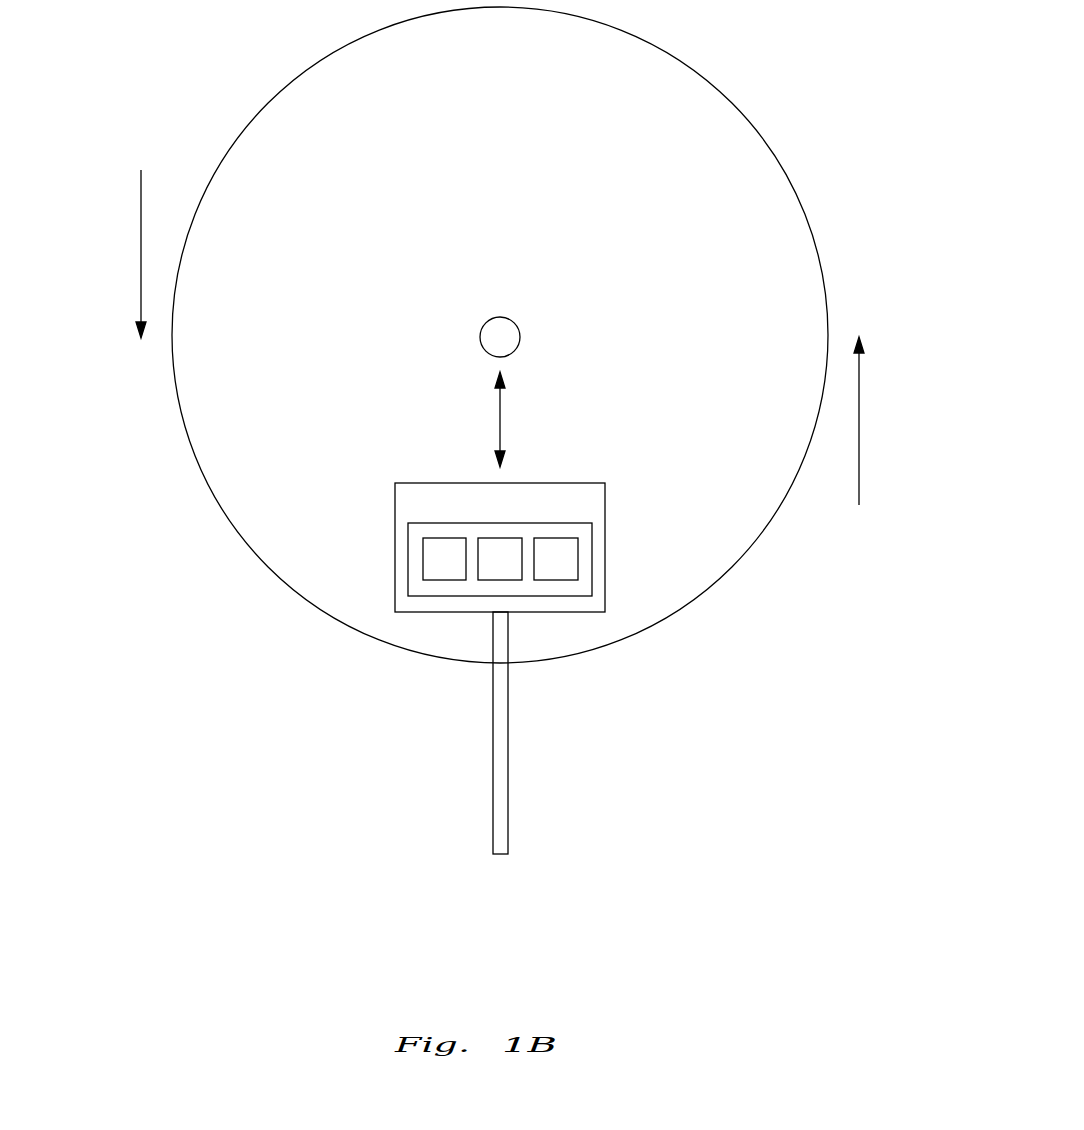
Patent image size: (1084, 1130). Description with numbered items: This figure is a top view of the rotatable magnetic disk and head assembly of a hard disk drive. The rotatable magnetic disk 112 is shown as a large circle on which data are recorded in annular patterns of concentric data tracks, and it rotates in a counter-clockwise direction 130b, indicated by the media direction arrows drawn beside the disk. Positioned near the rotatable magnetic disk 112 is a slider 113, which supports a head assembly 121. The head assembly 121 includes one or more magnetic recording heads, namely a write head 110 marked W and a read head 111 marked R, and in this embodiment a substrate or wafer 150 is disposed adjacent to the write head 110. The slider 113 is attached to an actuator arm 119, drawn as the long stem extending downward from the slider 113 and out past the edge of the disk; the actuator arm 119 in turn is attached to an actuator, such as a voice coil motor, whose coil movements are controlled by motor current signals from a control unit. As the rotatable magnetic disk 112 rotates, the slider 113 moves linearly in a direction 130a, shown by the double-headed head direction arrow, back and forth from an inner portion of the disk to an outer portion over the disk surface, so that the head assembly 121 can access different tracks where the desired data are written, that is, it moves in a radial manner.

The rotatable magnetic disk 112 is at (521, 133).
The counter-clockwise direction 130b is at (141, 238).
The direction 130a is at (500, 416).
The slider 113 is at (395, 505).
The head assembly 121 is at (515, 523).
The substrate or wafer 150 is at (438, 560).
The write head 110 is at (498, 538).
The read head 111 is at (578, 560).
The actuator arm 119 is at (508, 801).